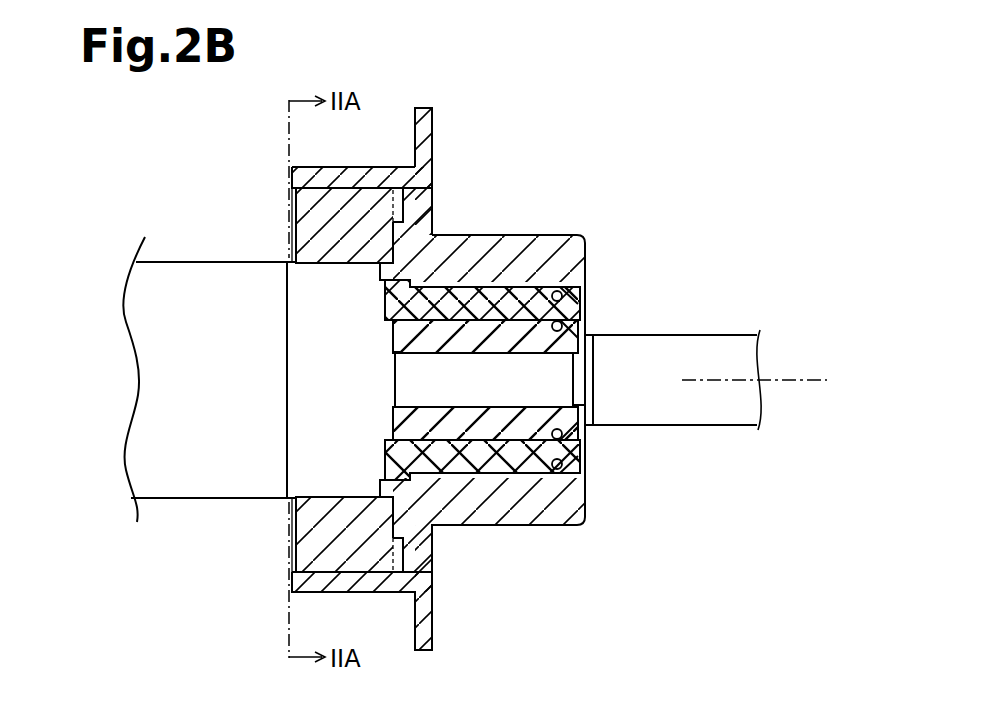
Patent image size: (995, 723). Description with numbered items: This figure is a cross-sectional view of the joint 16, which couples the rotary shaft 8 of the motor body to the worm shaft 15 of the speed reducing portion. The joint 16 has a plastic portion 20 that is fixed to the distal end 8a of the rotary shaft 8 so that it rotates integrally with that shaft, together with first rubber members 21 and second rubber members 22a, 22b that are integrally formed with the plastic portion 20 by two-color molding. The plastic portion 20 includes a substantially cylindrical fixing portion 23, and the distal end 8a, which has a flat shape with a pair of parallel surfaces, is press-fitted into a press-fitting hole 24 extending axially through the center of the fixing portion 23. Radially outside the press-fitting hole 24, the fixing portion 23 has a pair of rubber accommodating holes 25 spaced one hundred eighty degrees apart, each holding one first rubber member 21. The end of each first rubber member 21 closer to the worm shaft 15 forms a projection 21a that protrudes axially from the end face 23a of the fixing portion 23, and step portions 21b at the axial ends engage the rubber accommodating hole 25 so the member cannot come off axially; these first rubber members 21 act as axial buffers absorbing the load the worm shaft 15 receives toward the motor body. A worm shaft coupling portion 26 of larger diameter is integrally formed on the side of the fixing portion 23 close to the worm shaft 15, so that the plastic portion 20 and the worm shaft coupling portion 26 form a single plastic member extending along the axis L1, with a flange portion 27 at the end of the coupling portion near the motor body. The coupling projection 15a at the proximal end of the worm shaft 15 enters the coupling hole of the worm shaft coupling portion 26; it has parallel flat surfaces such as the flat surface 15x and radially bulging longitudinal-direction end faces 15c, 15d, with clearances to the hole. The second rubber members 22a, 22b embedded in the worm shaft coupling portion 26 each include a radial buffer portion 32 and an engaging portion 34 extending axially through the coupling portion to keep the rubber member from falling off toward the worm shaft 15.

The worm shaft 15 is at (170, 262).
The longitudinal-direction end face 15c is at (308, 260).
The flat surface 15x is at (287, 389).
The coupling projection 15a is at (304, 503).
The longitudinal-direction end face 15d is at (318, 522).
The second rubber member 22a is at (338, 186).
The second rubber member 22b is at (320, 577).
The worm shaft coupling portion 26 is at (377, 186).
The flange portion 27 is at (432, 124).
The radial buffer portion 32 is at (333, 265).
The engaging portion 34 is at (432, 200).
The fixing portion 23 is at (530, 240).
The end face 23a is at (393, 346).
The joint 16 is at (585, 241).
The plastic portion 20 is at (560, 572).
The first rubber member 21 is at (513, 320).
The projection 21a is at (388, 308).
The step portion 21b is at (430, 320).
The press-fitting hole 24 is at (583, 412).
The rubber accommodating hole 25 is at (583, 293).
The rotary shaft 8 is at (690, 335).
The distal end 8a is at (395, 385).
The axis L1 is at (787, 382).